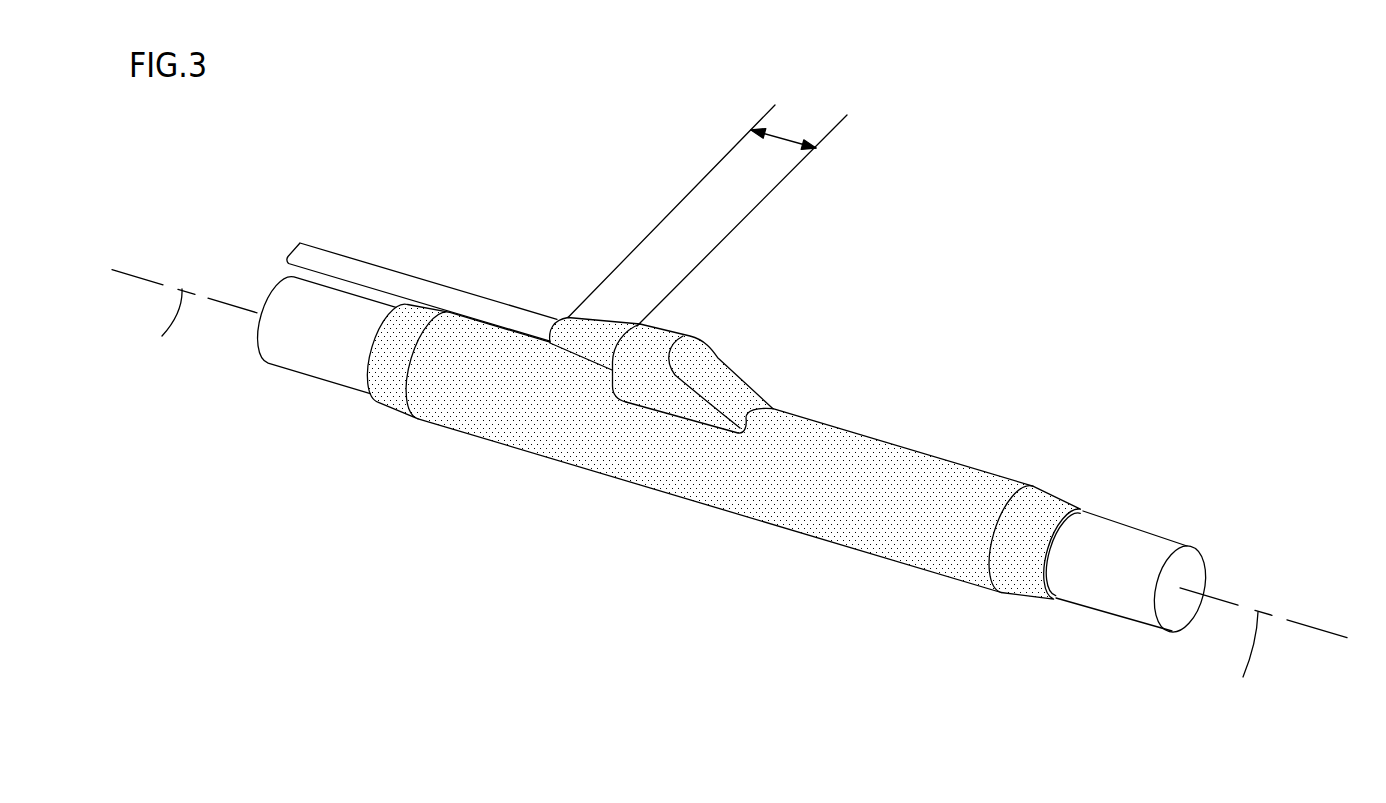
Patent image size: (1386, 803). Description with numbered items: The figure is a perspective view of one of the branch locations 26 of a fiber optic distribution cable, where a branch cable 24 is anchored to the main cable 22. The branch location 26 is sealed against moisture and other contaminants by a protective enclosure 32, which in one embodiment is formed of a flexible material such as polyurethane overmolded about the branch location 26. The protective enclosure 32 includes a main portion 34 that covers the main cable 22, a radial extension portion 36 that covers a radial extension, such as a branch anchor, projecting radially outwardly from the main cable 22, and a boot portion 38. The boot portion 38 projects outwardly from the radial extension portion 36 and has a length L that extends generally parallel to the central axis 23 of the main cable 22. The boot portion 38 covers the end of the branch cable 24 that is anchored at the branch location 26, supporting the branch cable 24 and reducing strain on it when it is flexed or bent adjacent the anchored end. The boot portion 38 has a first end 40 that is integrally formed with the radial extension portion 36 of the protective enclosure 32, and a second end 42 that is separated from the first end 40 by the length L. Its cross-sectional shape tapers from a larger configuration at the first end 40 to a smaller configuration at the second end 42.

The main cable 22 is at (1136, 530).
The central axis 23 is at (729, 488).
The branch cable 24 is at (340, 252).
The branch location 26 is at (862, 395).
The protective enclosure 32 is at (975, 467).
The main portion 34 is at (835, 542).
The radial extension portion 36 is at (715, 350).
The boot portion 38 is at (597, 320).
The first end 40 is at (610, 370).
The second end 42 is at (557, 318).